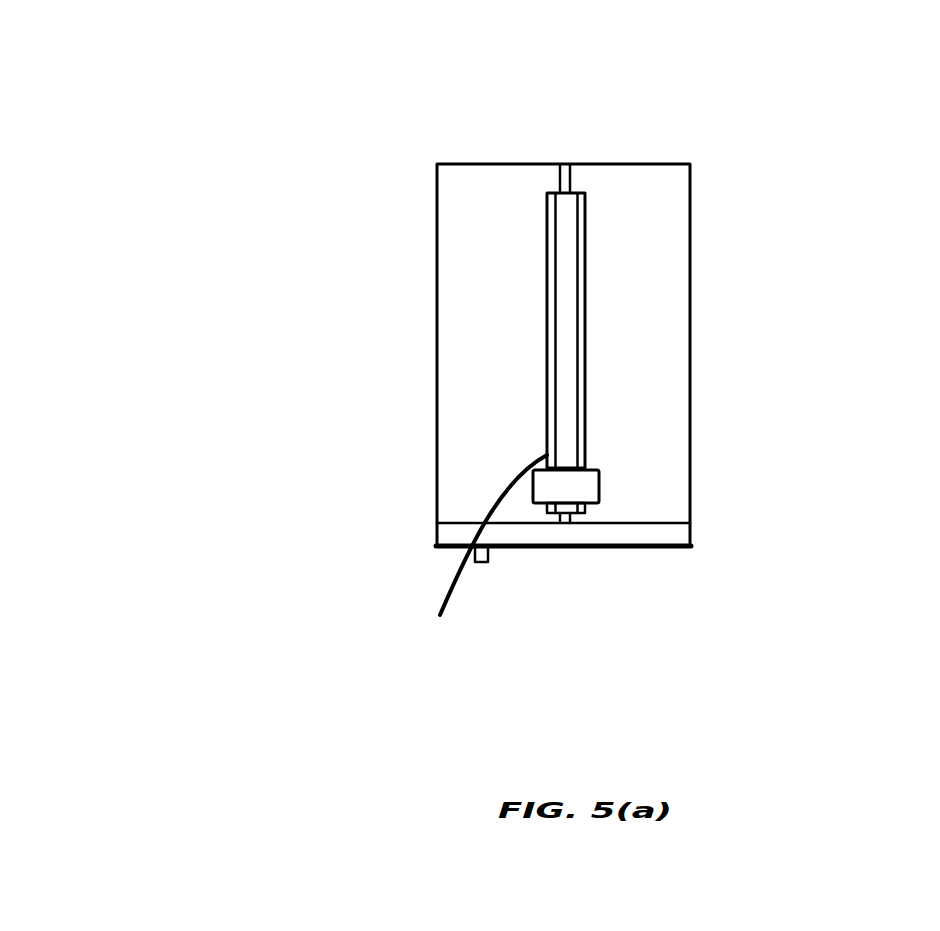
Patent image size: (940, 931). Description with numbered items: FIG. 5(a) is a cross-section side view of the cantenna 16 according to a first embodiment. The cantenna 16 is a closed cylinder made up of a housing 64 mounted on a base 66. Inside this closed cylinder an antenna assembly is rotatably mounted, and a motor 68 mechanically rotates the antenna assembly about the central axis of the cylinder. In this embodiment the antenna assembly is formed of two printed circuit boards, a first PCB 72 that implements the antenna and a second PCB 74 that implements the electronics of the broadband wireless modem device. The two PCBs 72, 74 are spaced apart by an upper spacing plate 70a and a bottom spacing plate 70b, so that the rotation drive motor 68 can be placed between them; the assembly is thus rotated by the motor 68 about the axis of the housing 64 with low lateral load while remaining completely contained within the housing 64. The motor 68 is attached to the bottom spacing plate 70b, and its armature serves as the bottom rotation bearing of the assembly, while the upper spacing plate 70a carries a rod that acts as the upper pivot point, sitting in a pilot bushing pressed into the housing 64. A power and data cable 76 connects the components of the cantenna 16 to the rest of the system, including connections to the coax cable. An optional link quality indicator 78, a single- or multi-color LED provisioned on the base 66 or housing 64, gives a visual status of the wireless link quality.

The cantenna 16 is at (293, 180).
The housing 64 is at (435, 442).
The base 66 is at (693, 538).
The motor 68 is at (598, 487).
The upper spacing plate 70a is at (557, 188).
The bottom spacing plate 70b is at (585, 527).
The printed circuit board 72 is at (585, 348).
The printed circuit board 74 is at (545, 352).
The power and data cable 76 is at (452, 577).
The link quality indicator 78 is at (482, 565).